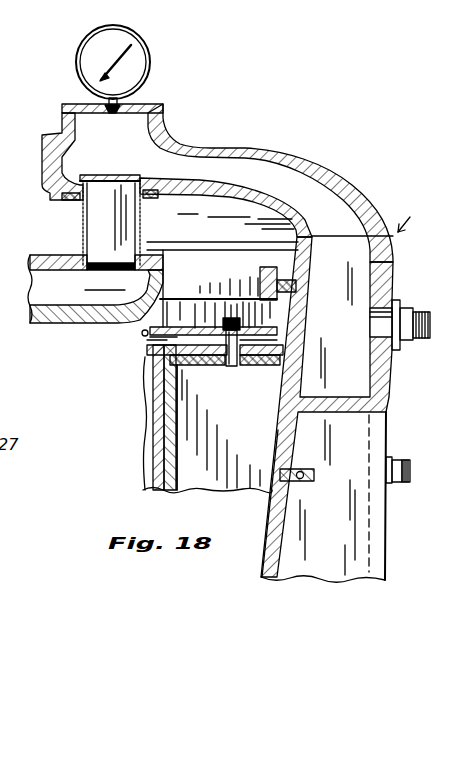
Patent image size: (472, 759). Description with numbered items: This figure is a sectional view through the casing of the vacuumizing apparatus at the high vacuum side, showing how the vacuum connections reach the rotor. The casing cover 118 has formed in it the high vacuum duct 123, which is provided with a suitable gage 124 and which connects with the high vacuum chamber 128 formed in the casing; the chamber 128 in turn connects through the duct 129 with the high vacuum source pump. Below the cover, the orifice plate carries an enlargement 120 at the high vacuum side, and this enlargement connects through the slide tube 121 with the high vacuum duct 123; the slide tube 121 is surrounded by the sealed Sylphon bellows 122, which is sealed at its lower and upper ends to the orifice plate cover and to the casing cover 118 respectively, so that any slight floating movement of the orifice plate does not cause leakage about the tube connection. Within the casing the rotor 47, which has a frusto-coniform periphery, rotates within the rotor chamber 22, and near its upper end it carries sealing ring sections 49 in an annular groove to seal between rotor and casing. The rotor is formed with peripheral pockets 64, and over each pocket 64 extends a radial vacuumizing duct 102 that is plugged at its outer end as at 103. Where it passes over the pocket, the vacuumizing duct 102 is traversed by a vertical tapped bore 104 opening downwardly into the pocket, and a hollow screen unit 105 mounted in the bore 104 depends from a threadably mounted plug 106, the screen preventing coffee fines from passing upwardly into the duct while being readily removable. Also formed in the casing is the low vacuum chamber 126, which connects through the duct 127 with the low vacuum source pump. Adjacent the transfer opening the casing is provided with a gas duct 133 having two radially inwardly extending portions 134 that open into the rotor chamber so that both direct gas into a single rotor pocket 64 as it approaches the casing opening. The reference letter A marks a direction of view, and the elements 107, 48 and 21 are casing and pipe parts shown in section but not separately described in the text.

The gage 124 is at (149, 53).
The high vacuum duct 123 is at (200, 157).
The casing cover 118 is at (296, 158).
The slide tube 121 is at (146, 158).
The Sylphon bellows 122 is at (80, 215).
The pipe 107 is at (35, 298).
The enlargement 120 is at (162, 277).
The block 48 is at (262, 272).
The sealing ring sections 49 is at (281, 279).
The housing 21 is at (307, 283).
The rotor chamber 22 is at (318, 260).
The high vacuum chamber 128 is at (358, 290).
The duct 129 is at (415, 310).
The view arrow A is at (406, 216).
The low vacuum chamber 126 is at (370, 432).
The duct 127 is at (410, 464).
The gas duct 133 is at (302, 471).
The radially inwardly extending portions 134 is at (264, 494).
The vacuumizing duct 102 is at (143, 335).
The plug 106 is at (223, 323).
The screen unit 105 is at (218, 358).
The tapped bore 104 is at (197, 370).
The plug 103 is at (238, 359).
The rotor 47 is at (158, 415).
The rotor pocket 64 is at (167, 393).